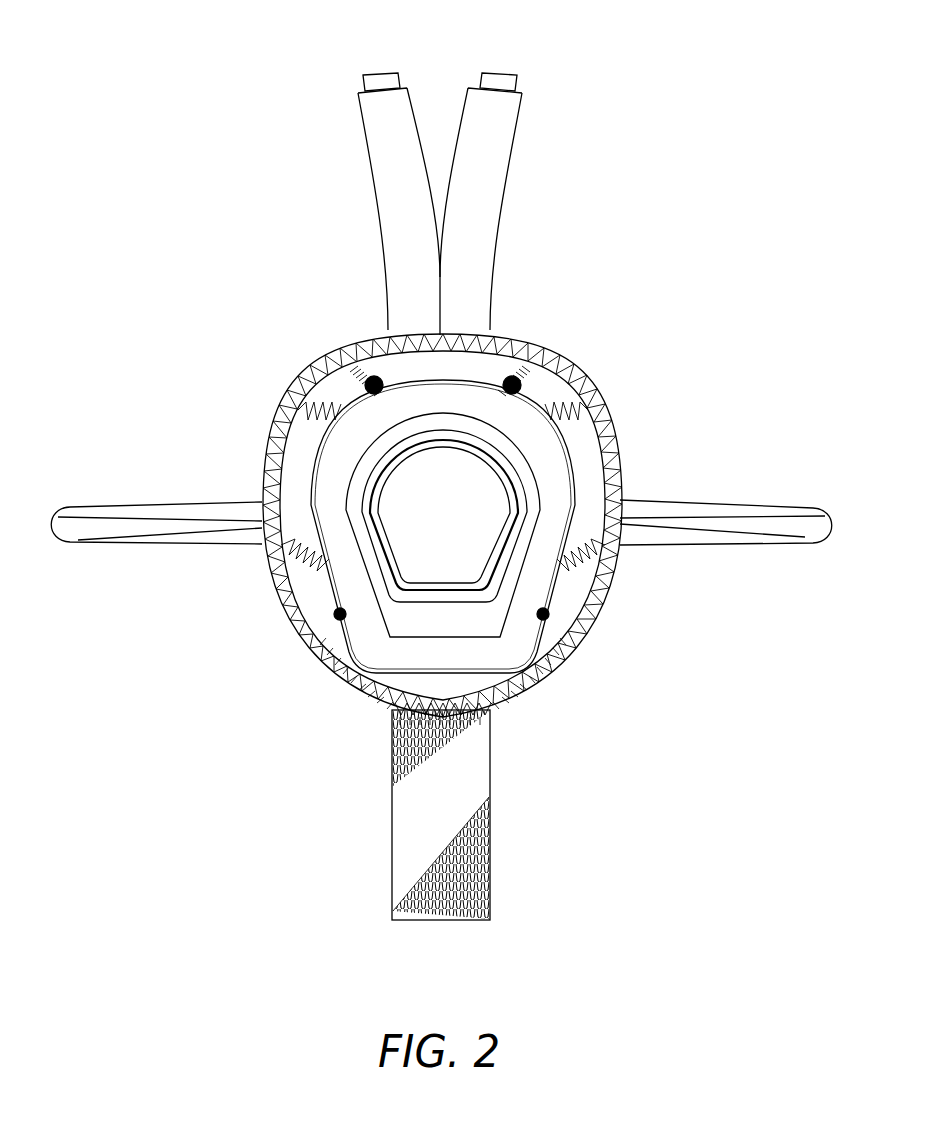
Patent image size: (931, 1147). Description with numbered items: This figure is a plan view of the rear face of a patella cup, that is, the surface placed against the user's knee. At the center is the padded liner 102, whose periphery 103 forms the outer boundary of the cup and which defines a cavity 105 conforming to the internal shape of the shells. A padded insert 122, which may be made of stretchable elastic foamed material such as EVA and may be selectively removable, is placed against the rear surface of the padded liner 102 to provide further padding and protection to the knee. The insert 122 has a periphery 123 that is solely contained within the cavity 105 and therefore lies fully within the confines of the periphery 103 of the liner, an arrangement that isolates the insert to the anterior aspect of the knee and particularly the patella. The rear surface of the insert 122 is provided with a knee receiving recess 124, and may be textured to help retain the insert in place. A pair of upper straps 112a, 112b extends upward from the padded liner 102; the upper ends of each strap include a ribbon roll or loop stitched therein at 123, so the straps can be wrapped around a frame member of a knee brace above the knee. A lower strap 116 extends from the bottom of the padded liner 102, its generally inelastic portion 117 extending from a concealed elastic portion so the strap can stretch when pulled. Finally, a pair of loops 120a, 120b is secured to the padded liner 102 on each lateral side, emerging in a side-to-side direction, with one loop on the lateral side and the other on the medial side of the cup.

The padded liner 102 is at (578, 478).
The periphery 103 is at (558, 675).
The cavity 105 is at (567, 600).
The upper strap 112a is at (381, 242).
The upper strap 112b is at (501, 241).
The lower strap 116 is at (498, 829).
The inelastic portion 117 is at (407, 803).
The loop 120a is at (168, 546).
The loop 120b is at (745, 500).
The padded insert 122 is at (543, 453).
The periphery of insert / ribbon roll 123 is at (385, 68).
The knee receiving recess 124 is at (472, 485).